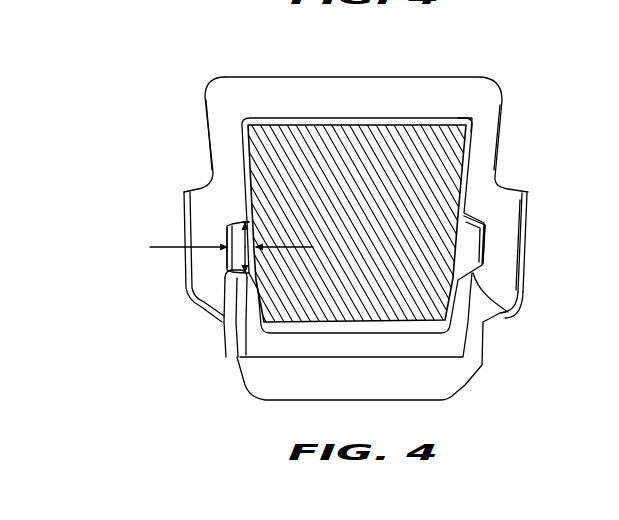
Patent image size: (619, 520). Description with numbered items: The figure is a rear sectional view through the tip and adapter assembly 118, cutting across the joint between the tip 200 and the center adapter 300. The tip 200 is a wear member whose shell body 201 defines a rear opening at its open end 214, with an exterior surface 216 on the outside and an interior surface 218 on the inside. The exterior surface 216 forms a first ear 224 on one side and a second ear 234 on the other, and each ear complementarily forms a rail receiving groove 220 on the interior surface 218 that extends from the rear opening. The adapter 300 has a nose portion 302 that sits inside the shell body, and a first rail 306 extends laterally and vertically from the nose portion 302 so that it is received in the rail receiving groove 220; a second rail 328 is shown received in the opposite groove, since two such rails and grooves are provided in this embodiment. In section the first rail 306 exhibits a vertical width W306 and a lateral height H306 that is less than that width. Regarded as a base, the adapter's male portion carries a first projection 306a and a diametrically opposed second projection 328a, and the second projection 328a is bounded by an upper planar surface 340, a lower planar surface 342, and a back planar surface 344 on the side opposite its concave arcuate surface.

The tip and adapter assembly 118 is at (523, 58).
The tip 200 is at (430, 60).
The shell body 201 is at (472, 86).
The open end 214 is at (468, 124).
The exterior surface 216 is at (497, 147).
The interior surface 218 is at (312, 123).
The rail receiving groove 220 is at (220, 236).
The first ear 224 is at (512, 249).
The second ear 234 is at (197, 184).
The center adapter 300 is at (432, 304).
The nose portion 302 is at (532, 190).
The first rail 306 is at (240, 231).
The first projection 306a is at (470, 240).
The hook 328 is at (478, 282).
The second projection 328a is at (237, 270).
The upper planar surface 340 is at (250, 220).
The lower planar surface 342 is at (228, 322).
The back planar surface 344 is at (191, 185).
The lateral height H306 is at (157, 248).
The vertical width W306 is at (228, 268).